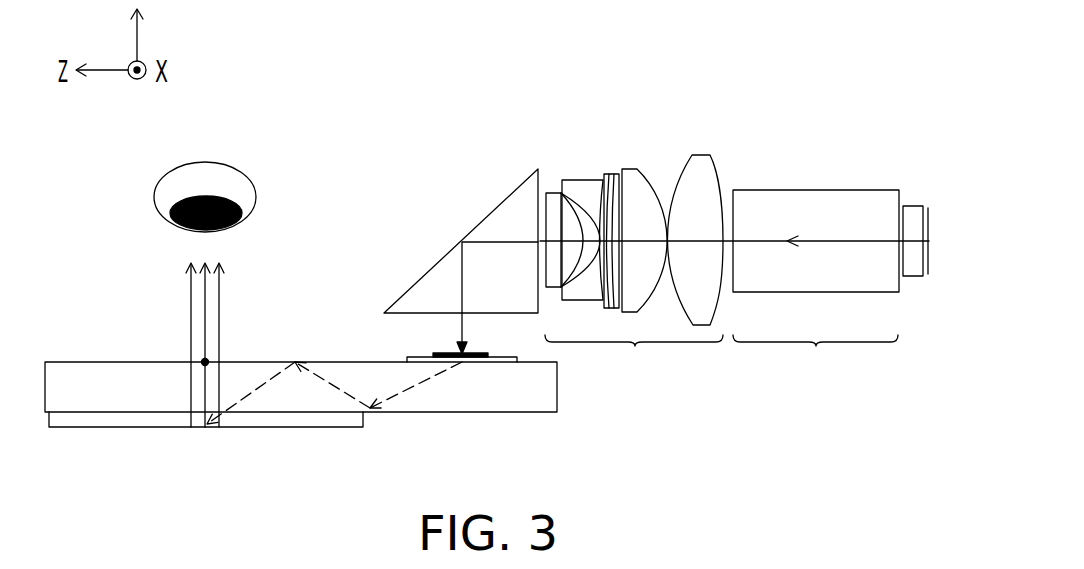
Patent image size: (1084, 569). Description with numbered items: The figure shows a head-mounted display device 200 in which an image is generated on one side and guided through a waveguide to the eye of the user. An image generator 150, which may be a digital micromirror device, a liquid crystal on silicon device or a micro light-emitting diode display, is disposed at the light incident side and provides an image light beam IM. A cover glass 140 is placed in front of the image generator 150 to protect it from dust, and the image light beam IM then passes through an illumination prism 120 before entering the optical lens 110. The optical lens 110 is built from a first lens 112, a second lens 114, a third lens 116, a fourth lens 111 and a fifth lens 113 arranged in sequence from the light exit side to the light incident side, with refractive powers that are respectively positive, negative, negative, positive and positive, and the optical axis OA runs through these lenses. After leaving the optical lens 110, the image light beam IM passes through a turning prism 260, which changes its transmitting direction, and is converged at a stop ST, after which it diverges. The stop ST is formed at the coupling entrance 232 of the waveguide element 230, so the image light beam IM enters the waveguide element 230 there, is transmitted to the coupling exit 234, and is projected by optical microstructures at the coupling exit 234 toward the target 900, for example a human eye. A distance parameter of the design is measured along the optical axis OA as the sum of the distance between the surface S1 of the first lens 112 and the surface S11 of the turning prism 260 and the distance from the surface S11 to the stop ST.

The target 900 is at (223, 175).
The waveguide element 230 is at (127, 375).
The coupling exit 234 is at (305, 420).
The coupling entrance 232 is at (503, 357).
The stop ST is at (456, 351).
The turning prism 260 is at (490, 228).
The surface of the turning prism S11 is at (504, 194).
The surface of the first lens S1 is at (540, 205).
The optical axis OA is at (761, 240).
The first lens 112 is at (557, 193).
The second lens 114 is at (583, 190).
The third lens 116 is at (613, 180).
The fourth lens 111 is at (640, 188).
The fifth lens 113 is at (702, 165).
The optical lens 110 is at (634, 360).
The illumination prism 120 is at (816, 287).
The image light beam IM is at (848, 243).
The cover glass 140 is at (912, 217).
The image generator 150 is at (930, 227).
The head-mounted display device 200 is at (930, 436).